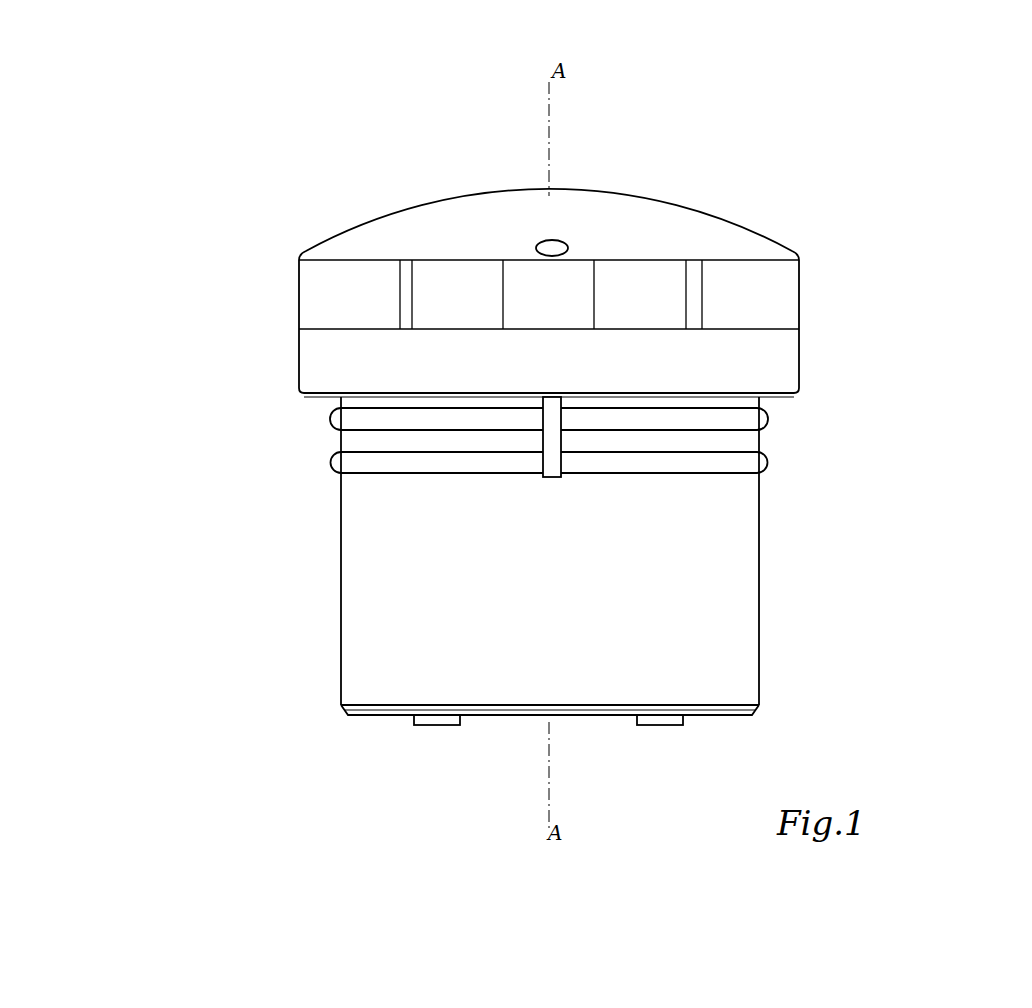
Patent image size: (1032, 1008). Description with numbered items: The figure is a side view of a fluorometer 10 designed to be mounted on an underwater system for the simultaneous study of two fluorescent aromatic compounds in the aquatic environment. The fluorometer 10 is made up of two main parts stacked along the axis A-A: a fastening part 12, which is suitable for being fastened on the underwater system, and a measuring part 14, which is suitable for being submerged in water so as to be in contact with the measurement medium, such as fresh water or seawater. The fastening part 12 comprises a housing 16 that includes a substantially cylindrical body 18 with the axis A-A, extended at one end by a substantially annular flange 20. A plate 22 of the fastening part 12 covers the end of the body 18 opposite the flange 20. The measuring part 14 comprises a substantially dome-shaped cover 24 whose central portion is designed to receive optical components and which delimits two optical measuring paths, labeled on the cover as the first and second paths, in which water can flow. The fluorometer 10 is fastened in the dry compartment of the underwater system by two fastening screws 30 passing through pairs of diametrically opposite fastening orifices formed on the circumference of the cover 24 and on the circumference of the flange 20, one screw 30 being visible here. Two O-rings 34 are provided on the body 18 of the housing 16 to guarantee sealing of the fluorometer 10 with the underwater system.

The fluorometer 10 is at (781, 213).
The fastening part 12 is at (896, 601).
The measuring part 14 is at (819, 300).
The housing 16 is at (338, 555).
The body 18 is at (740, 561).
The flange 20 is at (783, 360).
The plate 22 is at (722, 715).
The cover 24 is at (582, 206).
The fastening screw 30 is at (552, 478).
The O-rings 34 is at (750, 462).